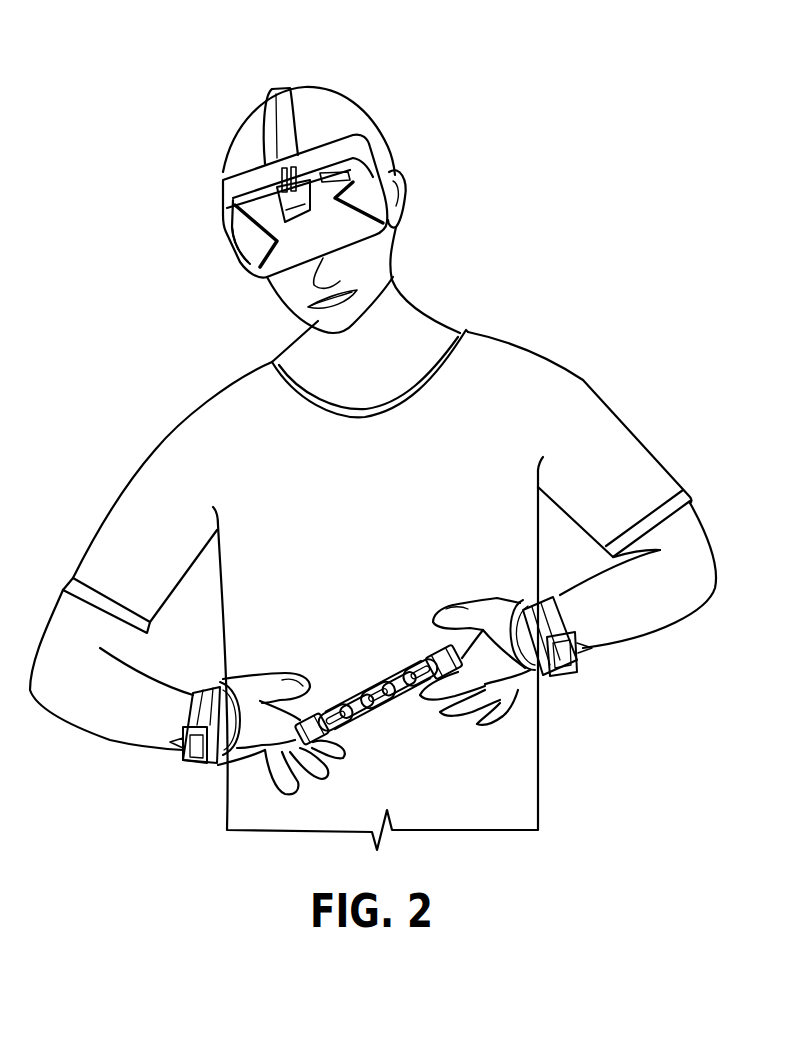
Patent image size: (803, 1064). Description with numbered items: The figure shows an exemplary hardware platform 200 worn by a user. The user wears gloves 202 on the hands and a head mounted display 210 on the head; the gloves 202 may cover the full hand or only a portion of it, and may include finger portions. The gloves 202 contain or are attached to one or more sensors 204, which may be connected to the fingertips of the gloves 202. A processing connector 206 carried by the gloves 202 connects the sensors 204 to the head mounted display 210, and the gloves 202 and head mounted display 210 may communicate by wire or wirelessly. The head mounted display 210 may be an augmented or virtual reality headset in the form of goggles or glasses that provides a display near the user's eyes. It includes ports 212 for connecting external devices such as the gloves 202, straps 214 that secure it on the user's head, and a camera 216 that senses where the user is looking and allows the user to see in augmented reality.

The hardware platform 200 is at (126, 23).
The gloves 202 is at (200, 695).
The sensors 204 is at (303, 717).
The processing connector 206 is at (191, 760).
The head mounted display 210 is at (212, 191).
The ports 212 is at (265, 160).
The straps 214 is at (291, 87).
The camera 216 is at (232, 247).